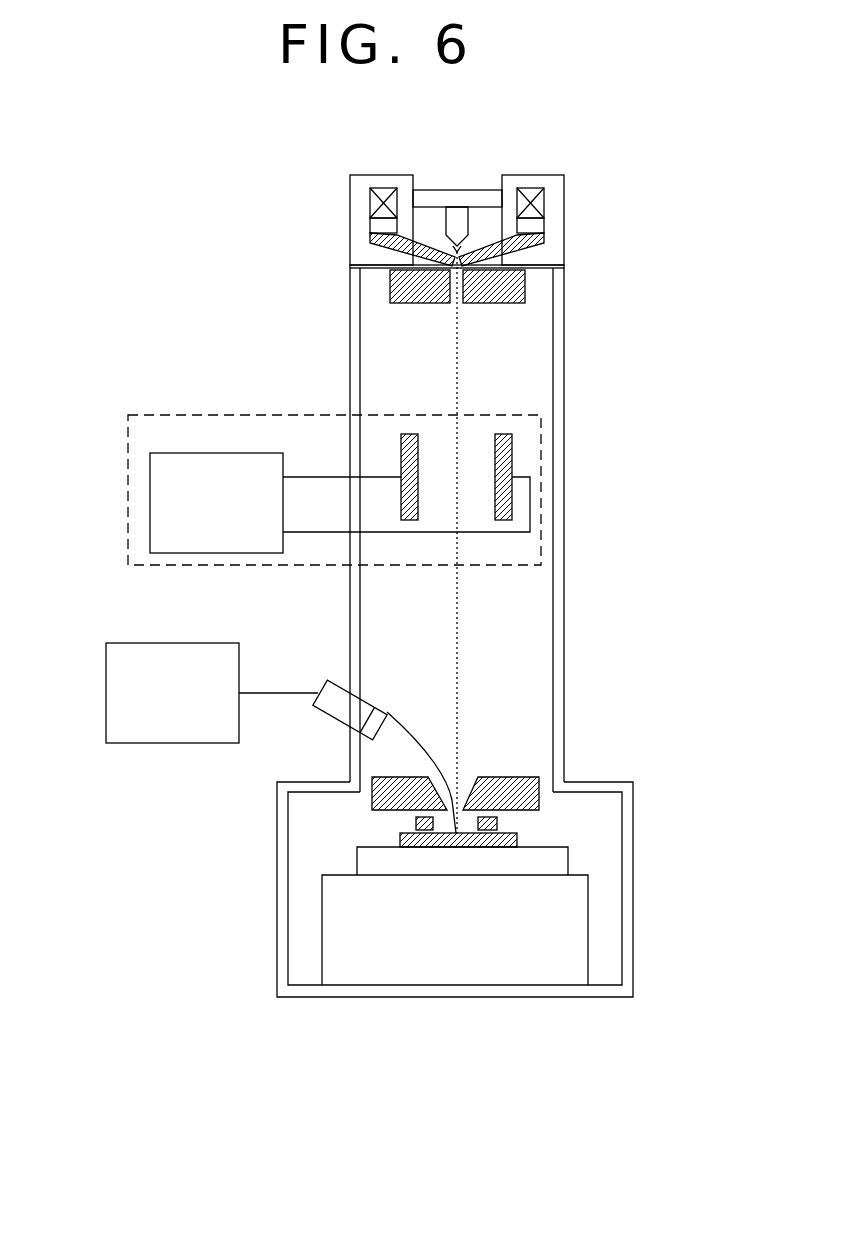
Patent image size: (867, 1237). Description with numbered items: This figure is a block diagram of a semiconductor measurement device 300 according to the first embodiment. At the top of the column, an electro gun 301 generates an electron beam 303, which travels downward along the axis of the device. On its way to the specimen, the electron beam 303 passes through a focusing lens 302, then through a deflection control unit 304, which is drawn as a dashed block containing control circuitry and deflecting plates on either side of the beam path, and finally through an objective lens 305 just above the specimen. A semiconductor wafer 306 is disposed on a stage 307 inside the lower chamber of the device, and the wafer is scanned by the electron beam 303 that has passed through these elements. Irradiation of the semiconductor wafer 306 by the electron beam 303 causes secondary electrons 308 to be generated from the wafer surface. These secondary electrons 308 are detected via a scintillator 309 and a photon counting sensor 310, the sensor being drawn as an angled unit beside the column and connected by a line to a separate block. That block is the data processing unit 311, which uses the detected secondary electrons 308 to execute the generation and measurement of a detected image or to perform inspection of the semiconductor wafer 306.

The semiconductor measurement device 300 is at (668, 398).
The electro gun 301 is at (458, 212).
The focusing lens 302 is at (536, 289).
The electron beam 303 is at (458, 384).
The deflection control unit 304 is at (192, 415).
The objective lens 305 is at (530, 776).
The semiconductor wafer 306 is at (518, 842).
The stage 307 is at (470, 978).
The secondary electrons 308 is at (398, 730).
The scintillator 309 is at (348, 747).
The photon counting sensor 310 is at (333, 678).
The data processing unit 311 is at (110, 643).